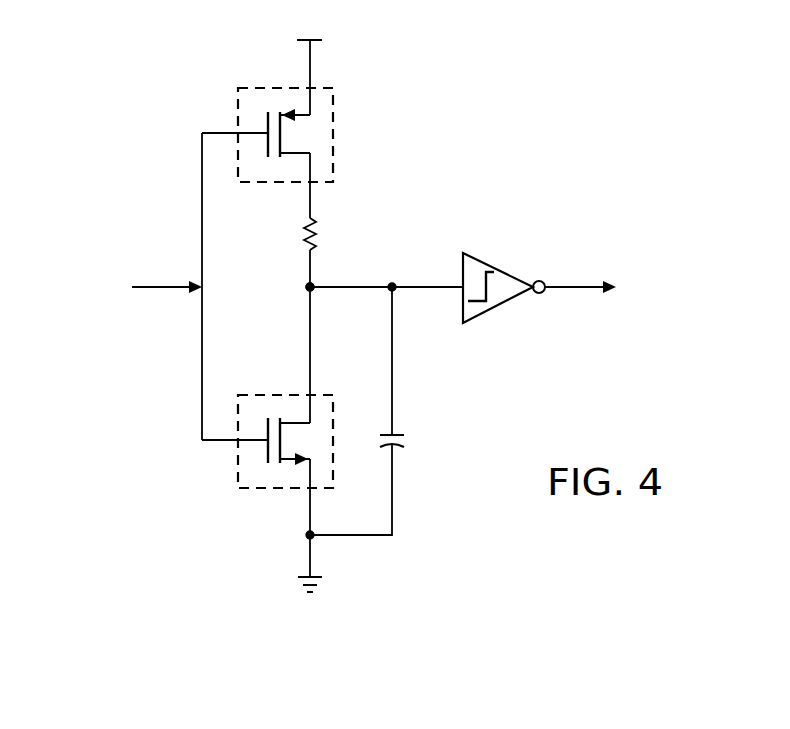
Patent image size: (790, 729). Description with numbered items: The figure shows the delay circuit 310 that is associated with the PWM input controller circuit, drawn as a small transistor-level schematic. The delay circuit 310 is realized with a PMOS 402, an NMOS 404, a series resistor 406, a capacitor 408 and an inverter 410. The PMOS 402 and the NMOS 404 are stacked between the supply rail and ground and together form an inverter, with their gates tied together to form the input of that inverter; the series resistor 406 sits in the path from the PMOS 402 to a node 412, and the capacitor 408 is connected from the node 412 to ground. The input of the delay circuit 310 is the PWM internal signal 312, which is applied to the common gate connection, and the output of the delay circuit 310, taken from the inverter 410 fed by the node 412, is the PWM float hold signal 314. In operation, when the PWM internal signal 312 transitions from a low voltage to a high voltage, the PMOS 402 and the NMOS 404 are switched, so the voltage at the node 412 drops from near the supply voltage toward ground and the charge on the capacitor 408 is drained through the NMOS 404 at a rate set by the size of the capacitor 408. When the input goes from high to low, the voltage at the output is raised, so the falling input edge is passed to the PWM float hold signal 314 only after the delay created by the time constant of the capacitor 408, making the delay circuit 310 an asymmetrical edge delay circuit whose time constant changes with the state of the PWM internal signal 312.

The delay circuit 310 is at (492, 140).
The PWM internal signal 312 is at (173, 292).
The PWM float hold signal 314 is at (573, 291).
The PMOS 402 is at (272, 86).
The NMOS 404 is at (273, 491).
The series resistor 406 is at (304, 232).
The capacitor 408 is at (406, 446).
The inverter 410 is at (500, 268).
The node 412 is at (314, 293).